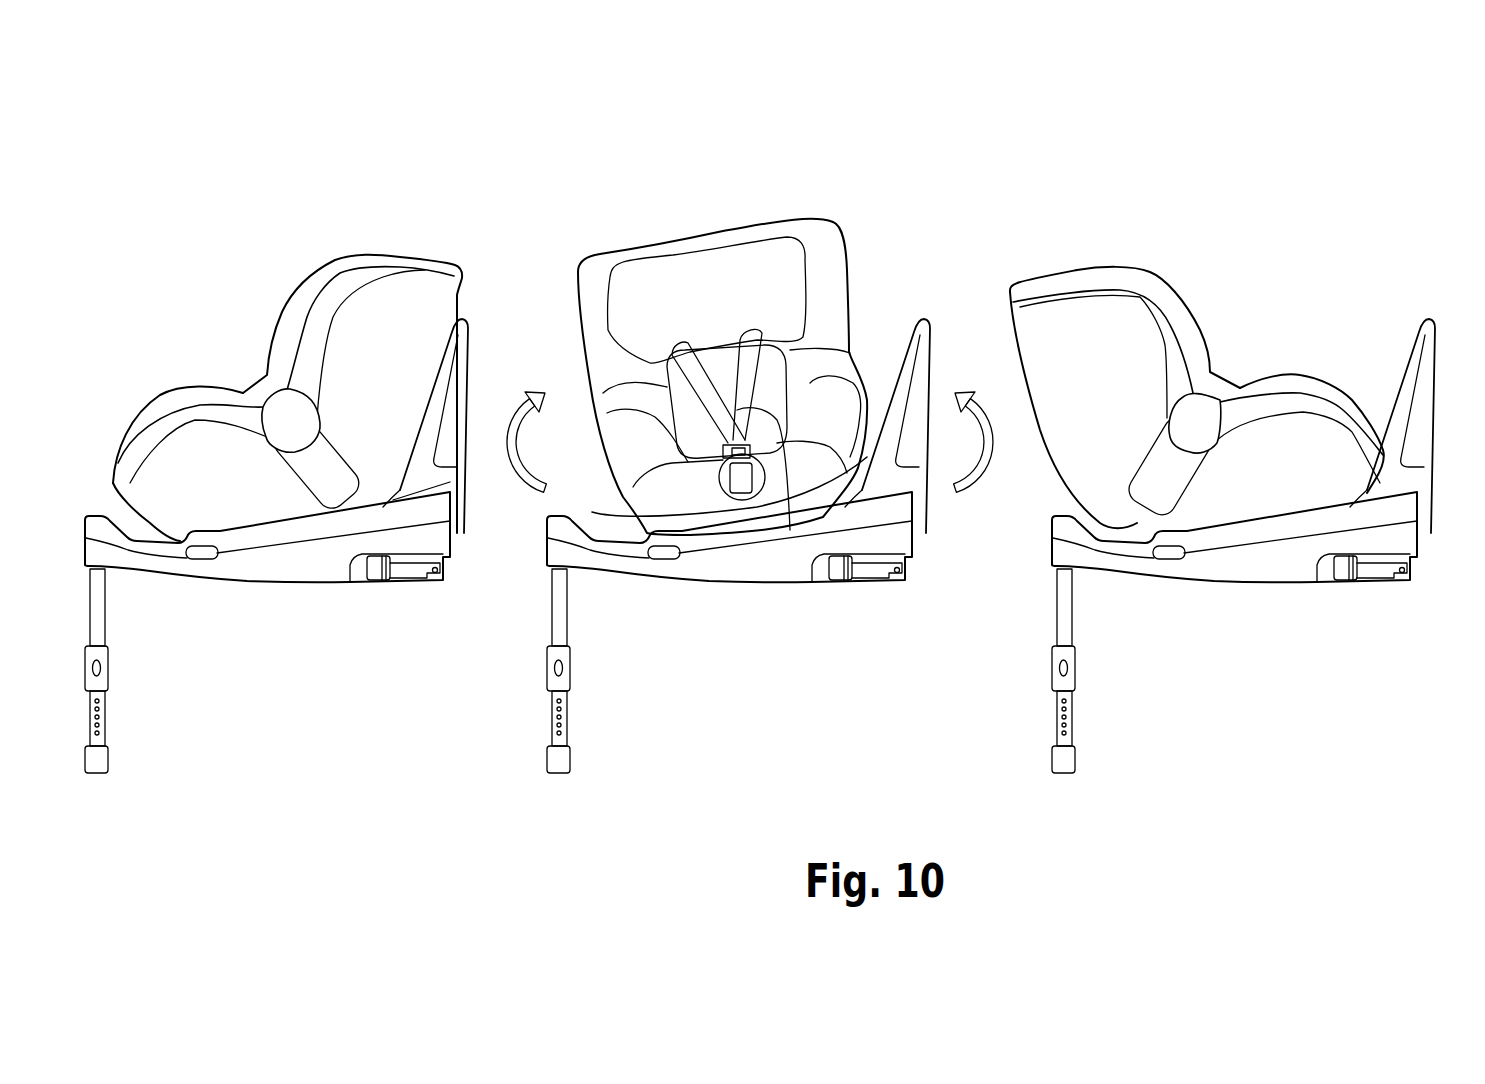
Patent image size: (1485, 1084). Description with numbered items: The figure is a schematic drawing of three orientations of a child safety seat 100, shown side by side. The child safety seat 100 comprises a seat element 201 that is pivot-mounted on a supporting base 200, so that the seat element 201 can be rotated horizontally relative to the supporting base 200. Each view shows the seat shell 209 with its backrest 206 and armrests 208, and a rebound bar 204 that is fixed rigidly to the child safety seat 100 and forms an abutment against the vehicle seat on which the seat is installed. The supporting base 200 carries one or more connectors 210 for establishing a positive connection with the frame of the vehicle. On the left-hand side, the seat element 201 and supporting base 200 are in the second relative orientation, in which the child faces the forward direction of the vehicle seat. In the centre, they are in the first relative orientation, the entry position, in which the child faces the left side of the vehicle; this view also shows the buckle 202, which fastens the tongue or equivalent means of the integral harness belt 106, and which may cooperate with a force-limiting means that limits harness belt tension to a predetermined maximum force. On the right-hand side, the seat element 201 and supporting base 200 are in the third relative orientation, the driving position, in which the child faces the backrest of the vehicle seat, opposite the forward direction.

The child safety seat 100 is at (192, 183).
The integral harness belt 106 is at (790, 530).
The supporting base 200 is at (275, 588).
The seat element 201 is at (284, 270).
The buckle 202 is at (723, 483).
The rebound bar 204 is at (458, 384).
The backrest 206 is at (426, 268).
The armrests 208 is at (181, 387).
The seat shell 209 is at (448, 297).
The connectors 210 is at (418, 568).